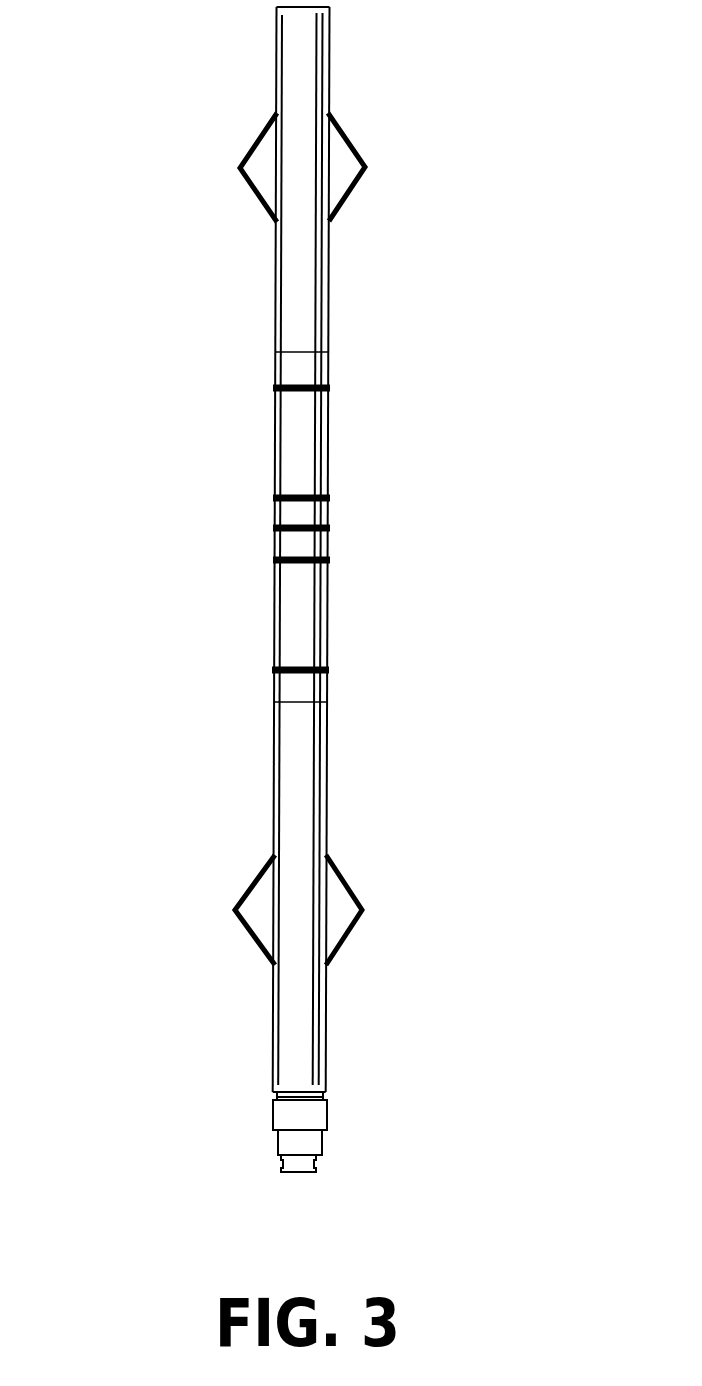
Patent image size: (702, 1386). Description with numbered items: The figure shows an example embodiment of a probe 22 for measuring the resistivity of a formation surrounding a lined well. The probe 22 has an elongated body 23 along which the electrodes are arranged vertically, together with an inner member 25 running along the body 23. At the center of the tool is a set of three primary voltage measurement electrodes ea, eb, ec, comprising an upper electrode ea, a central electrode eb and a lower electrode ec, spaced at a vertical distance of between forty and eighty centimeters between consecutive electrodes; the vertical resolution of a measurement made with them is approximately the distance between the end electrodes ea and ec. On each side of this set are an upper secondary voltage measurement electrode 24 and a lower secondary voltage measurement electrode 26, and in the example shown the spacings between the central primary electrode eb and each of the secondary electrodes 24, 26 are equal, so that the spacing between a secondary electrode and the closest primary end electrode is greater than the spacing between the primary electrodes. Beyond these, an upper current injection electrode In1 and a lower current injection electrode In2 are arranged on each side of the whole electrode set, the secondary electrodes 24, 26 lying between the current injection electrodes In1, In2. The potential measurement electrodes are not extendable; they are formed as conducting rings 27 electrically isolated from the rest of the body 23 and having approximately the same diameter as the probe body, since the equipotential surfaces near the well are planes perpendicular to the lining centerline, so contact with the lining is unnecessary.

The probe 22 is at (305, 589).
The body 23 is at (312, 286).
The upper secondary voltage measurement electrode 24 is at (327, 387).
The inner tube 25 is at (303, 55).
The lower secondary voltage measurement electrode 26 is at (327, 668).
The conducting rings 27 is at (301, 522).
The upper primary voltage measurement electrode ea is at (328, 497).
The central primary voltage measurement electrode eb is at (328, 528).
The lower primary voltage measurement electrode ec is at (328, 560).
The upper current injection electrode In1 is at (365, 167).
The lower current injection electrode In2 is at (362, 910).